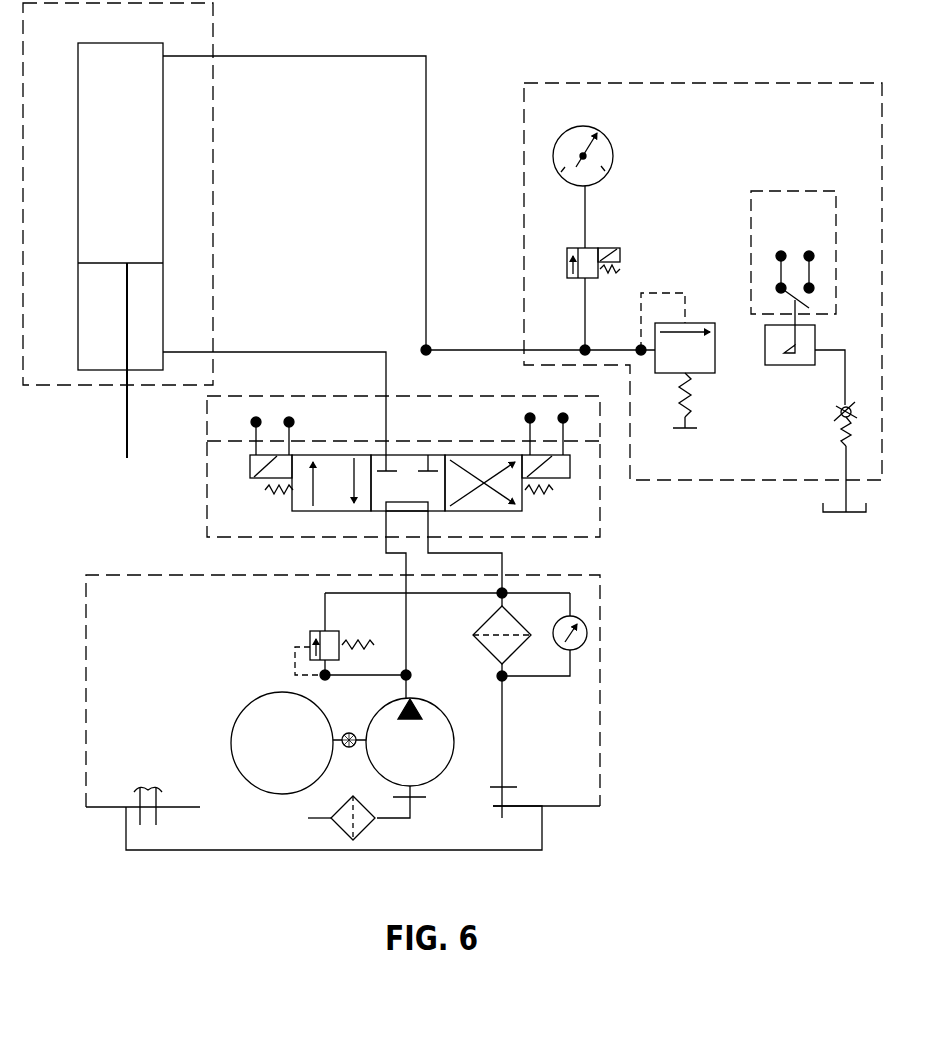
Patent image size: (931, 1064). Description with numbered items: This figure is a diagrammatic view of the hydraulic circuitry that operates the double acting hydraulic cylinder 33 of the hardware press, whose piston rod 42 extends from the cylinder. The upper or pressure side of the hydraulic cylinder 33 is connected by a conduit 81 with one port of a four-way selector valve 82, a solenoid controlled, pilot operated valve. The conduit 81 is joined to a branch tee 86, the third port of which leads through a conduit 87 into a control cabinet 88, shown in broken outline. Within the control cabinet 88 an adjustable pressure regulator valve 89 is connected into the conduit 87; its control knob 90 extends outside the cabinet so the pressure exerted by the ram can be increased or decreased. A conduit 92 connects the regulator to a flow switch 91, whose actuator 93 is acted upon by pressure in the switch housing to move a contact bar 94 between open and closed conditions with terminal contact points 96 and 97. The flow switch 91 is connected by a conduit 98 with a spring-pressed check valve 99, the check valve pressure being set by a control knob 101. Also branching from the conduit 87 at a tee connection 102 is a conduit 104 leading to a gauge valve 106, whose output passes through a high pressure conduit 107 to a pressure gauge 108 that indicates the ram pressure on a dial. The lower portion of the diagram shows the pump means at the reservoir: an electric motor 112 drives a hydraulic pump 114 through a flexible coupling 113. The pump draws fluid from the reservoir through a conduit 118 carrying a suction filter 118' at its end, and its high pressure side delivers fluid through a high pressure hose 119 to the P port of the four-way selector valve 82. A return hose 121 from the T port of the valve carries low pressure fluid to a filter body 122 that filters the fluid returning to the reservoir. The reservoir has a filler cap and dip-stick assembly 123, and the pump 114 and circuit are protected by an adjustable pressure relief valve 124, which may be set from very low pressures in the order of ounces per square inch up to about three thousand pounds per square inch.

The hydraulic cylinder 33 is at (133, 191).
The piston rod 42 is at (125, 428).
The conduit 81 is at (425, 117).
The four-way selector valve 82 is at (600, 525).
The branch tee 86 is at (430, 347).
The conduit 87 is at (484, 349).
The control cabinet 88 is at (655, 80).
The adjustable pressure regulator valve 89 is at (700, 365).
The control knob 90 is at (692, 430).
The flow switch 91 is at (797, 363).
The conduit 92 is at (725, 346).
The actuator 93 is at (815, 337).
The contact bar 94 is at (788, 294).
The terminal contact point 96 is at (779, 286).
The terminal contact point 97 is at (811, 287).
The conduit 98 is at (846, 374).
The spring-pressed check valve 99 is at (838, 420).
The control knob 101 is at (833, 514).
The tee connection 102 is at (587, 345).
The conduit 104 is at (584, 312).
The gauge valve 106 is at (588, 251).
The high pressure conduit 107 is at (588, 213).
The pressure gauge 108 is at (612, 155).
The electric motor 112 is at (256, 717).
The flexible coupling 113 is at (347, 733).
The hydraulic pump 114 is at (431, 718).
The conduit 118 is at (383, 794).
The suction filter 118' is at (335, 815).
The high pressure hose 119 is at (385, 511).
The return hose 121 is at (429, 512).
The filter body 122 is at (482, 622).
The filler cap and dip-stick assembly 123 is at (147, 792).
The pressure relief valve 124 is at (331, 636).